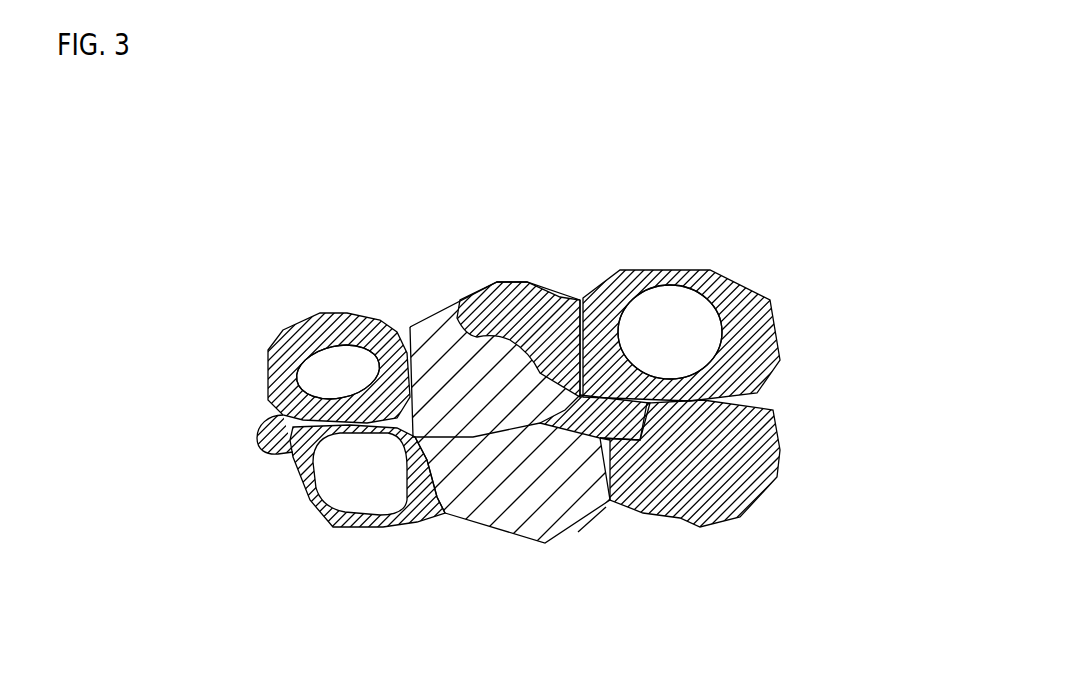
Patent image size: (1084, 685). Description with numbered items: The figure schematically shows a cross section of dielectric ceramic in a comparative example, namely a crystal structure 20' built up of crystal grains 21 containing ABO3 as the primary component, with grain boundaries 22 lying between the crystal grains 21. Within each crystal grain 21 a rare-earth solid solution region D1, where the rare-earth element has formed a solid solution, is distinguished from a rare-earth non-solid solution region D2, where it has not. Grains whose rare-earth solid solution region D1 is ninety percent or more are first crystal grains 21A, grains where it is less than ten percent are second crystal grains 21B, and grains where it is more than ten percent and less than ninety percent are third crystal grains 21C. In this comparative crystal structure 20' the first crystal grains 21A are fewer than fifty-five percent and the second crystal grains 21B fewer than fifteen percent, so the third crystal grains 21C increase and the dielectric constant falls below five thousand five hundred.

The crystal structure 20' is at (542, 336).
The crystal grains 21 is at (880, 365).
The first crystal grain 21A is at (783, 440).
The second crystal grain 21B is at (596, 523).
The third crystal grain 21C is at (783, 364).
The grain boundary 22 is at (443, 495).
The rare-earth solid solution region D1 is at (601, 308).
The rare-earth non-solid solution region D2 is at (338, 358).